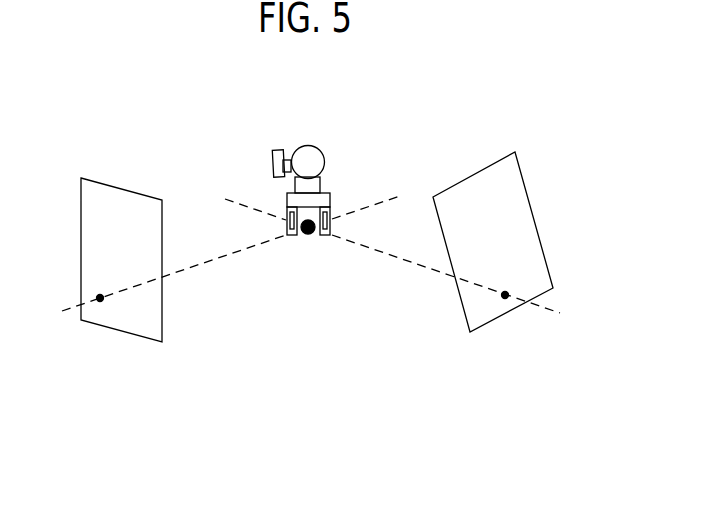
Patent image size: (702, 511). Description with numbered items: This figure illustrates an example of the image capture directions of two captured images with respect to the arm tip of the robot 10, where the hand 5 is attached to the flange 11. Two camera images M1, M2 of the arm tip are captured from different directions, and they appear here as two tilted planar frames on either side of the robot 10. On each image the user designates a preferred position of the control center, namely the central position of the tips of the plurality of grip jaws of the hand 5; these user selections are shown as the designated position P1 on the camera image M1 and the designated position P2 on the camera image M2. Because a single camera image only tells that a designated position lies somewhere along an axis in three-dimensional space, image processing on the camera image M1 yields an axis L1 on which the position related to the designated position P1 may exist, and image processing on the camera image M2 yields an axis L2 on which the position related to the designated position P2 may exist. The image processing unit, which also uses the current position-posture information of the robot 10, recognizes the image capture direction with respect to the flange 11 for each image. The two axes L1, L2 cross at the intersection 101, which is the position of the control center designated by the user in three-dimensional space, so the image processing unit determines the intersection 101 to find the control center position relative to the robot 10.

The hand 5 is at (314, 193).
The robot 10 is at (274, 144).
The flange 11 is at (322, 190).
The intersection 101 is at (308, 237).
The camera image M1 is at (125, 187).
The camera image M2 is at (478, 172).
The designated position P1 is at (103, 303).
The designated position P2 is at (505, 300).
The axis L1 is at (210, 262).
The axis L2 is at (407, 260).